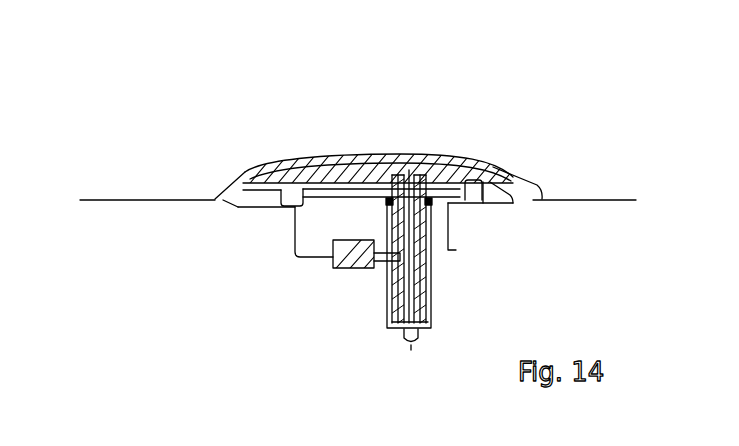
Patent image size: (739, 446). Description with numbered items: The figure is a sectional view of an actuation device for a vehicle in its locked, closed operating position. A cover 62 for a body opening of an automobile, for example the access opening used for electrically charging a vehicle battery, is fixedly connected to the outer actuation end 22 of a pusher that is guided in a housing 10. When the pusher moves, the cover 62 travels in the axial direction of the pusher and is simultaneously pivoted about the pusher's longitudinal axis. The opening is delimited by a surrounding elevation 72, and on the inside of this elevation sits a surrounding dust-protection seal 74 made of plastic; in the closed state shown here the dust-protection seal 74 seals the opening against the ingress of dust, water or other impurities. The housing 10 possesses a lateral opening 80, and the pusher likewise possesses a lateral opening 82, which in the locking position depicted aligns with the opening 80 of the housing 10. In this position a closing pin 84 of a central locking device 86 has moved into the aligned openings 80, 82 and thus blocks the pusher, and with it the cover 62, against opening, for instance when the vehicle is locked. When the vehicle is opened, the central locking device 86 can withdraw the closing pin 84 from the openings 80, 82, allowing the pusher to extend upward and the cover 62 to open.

The housing 10 is at (433, 224).
The outer actuation end 22 is at (403, 175).
The cover 62 is at (432, 162).
The surrounding elevation 72 is at (255, 192).
The dust-protection seal 74 is at (291, 209).
The lateral opening 80 is at (390, 263).
The lateral opening 82 is at (428, 264).
The closing pin 84 is at (372, 265).
The central locking device 86 is at (331, 268).